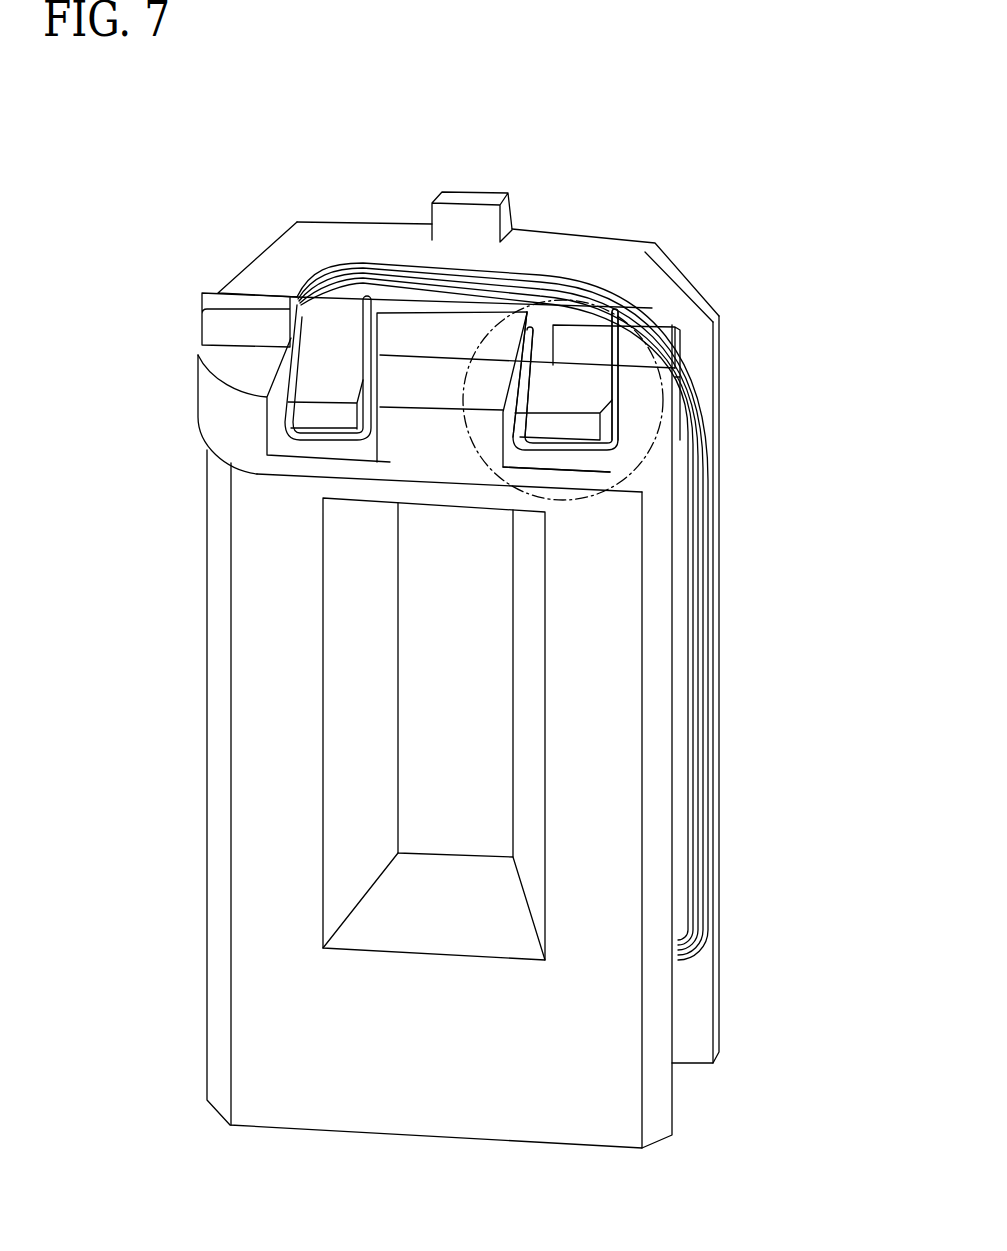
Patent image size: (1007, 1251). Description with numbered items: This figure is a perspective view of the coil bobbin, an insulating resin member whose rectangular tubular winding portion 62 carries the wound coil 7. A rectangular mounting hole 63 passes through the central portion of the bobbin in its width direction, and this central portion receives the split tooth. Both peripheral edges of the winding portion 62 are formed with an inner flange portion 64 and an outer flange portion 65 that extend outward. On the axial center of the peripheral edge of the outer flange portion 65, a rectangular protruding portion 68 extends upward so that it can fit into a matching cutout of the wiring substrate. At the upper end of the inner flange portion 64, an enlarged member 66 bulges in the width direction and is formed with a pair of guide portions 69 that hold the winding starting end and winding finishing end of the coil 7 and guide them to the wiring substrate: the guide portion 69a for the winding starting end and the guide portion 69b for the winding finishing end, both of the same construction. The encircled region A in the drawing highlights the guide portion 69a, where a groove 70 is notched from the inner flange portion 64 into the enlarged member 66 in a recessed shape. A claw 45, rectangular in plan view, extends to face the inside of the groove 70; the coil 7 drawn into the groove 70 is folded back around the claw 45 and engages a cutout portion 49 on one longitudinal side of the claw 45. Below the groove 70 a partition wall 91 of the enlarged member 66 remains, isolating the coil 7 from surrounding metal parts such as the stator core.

The outer flange portion 65 is at (297, 221).
The protruding portion 68 is at (470, 192).
The coil 7 is at (502, 535).
The winding portion 62 is at (512, 285).
The groove 70 is at (517, 393).
The cutout portion 49 is at (615, 392).
The inner flange portion 64 is at (202, 308).
The enlarged member 66 is at (183, 391).
The claw 45 is at (590, 410).
The guide portions 69 is at (449, 445).
The guide portion 69a is at (604, 483).
The guide portion 69b is at (301, 442).
The partition wall 91 is at (492, 470).
The mounting hole 63 is at (350, 640).
The region A is at (690, 390).